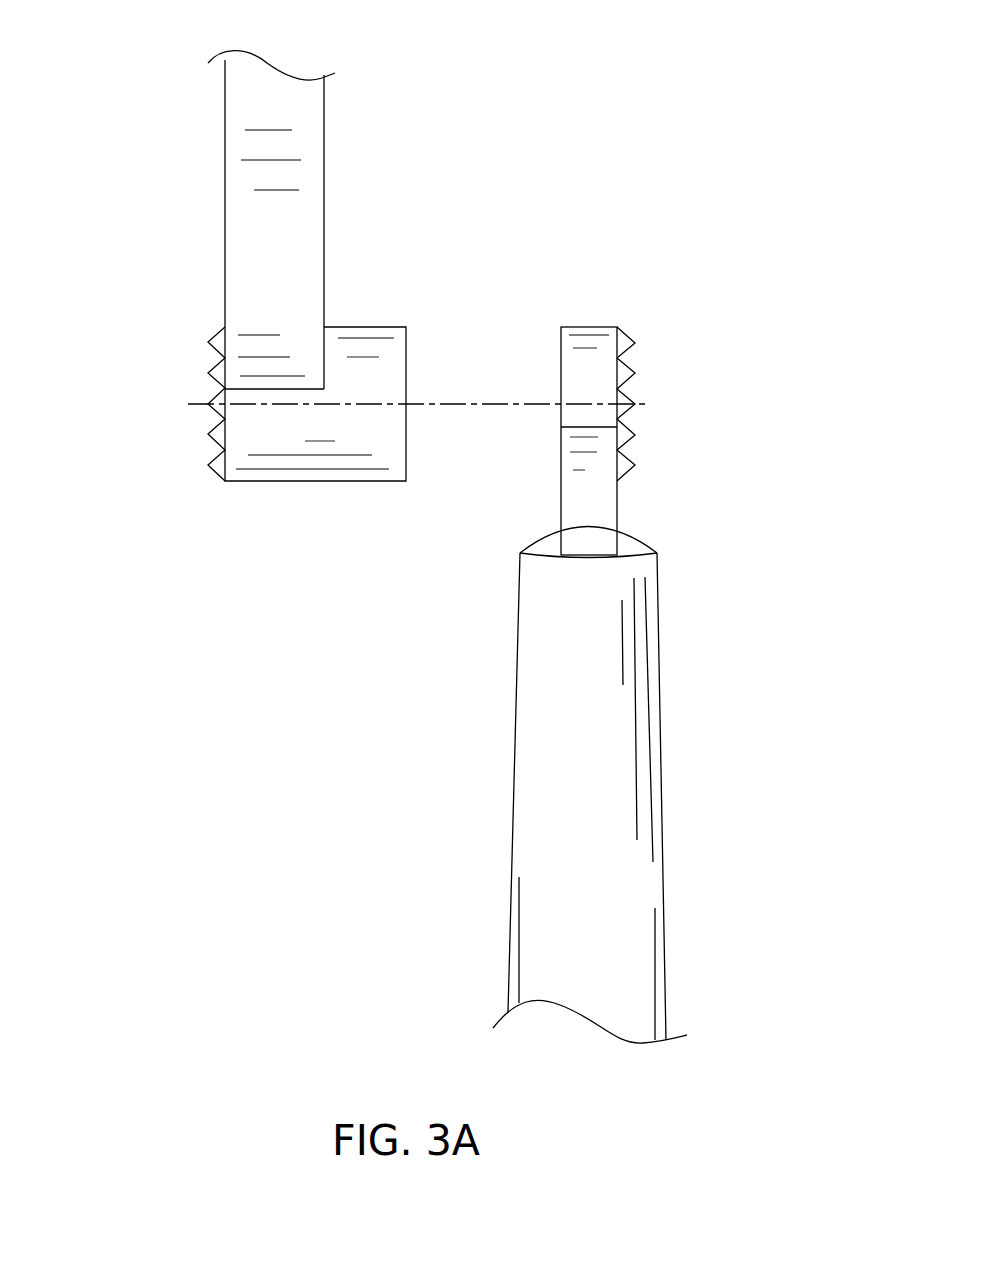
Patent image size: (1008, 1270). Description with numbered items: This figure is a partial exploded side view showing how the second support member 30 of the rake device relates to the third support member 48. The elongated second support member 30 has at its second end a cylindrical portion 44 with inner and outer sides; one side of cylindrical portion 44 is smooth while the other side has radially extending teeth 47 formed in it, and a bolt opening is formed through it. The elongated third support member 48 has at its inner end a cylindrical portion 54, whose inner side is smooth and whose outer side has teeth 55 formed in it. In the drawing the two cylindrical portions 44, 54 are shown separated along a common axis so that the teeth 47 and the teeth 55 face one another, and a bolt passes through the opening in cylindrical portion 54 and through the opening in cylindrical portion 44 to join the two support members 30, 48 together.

The second support member 30 is at (679, 728).
The cylindrical portion 44 is at (593, 343).
The teeth 47 is at (633, 374).
The third support member 48 is at (209, 159).
The cylindrical portion 54 is at (376, 353).
The teeth 55 is at (208, 433).